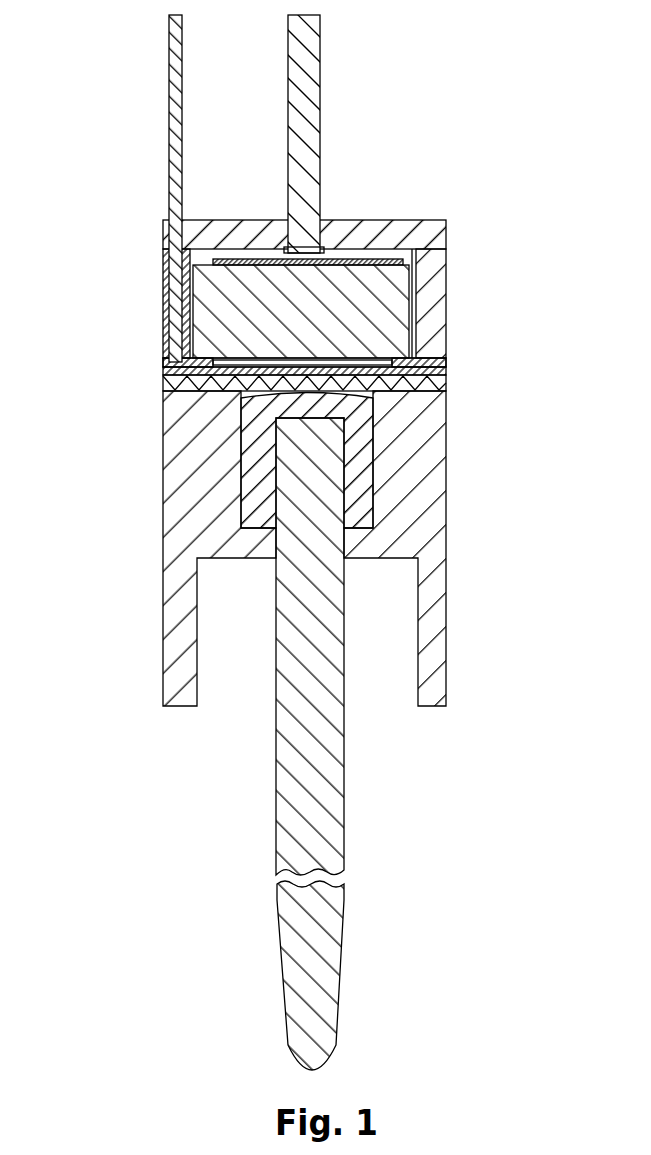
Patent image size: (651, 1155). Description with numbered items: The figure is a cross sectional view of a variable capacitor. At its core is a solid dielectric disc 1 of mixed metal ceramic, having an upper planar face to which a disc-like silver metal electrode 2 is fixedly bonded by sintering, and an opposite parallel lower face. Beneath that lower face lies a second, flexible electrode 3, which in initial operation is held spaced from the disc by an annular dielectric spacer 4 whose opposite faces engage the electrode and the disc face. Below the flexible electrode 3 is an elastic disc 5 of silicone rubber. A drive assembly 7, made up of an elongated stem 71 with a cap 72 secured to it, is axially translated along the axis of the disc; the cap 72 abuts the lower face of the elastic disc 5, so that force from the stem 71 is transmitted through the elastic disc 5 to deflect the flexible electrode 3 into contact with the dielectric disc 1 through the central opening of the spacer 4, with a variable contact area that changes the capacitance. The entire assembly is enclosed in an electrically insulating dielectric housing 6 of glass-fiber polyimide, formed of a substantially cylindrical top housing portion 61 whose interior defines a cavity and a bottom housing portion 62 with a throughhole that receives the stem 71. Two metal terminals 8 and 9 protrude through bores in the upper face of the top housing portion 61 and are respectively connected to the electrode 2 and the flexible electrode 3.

The solid dielectric disc 1 is at (402, 307).
The metal electrode 2 is at (385, 250).
The flexible electrode 3 is at (410, 383).
The annular dielectric spacer 4 is at (393, 364).
The elastic disc 5 is at (200, 393).
The dielectric housing 6 is at (236, 309).
The top housing portion 61 is at (163, 283).
The bottom housing portion 62 is at (163, 398).
The drive assembly 7 is at (396, 732).
The elongated stem 71 is at (335, 597).
The cap 72 is at (372, 514).
The metal terminal 8 is at (313, 83).
The metal terminal 9 is at (172, 74).